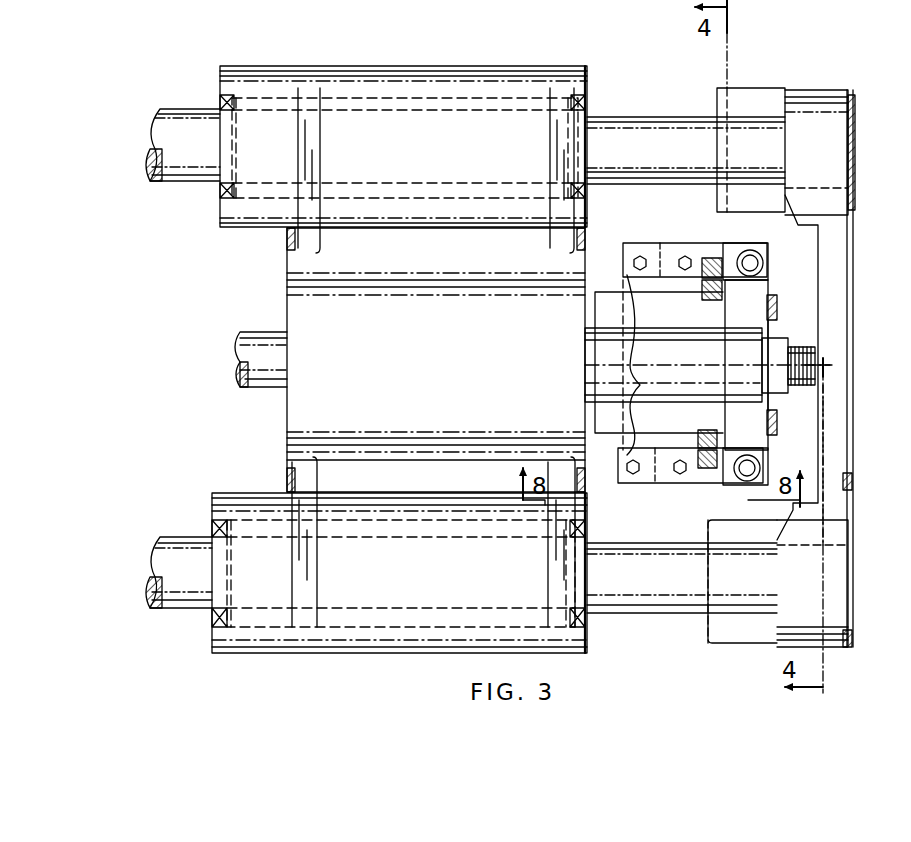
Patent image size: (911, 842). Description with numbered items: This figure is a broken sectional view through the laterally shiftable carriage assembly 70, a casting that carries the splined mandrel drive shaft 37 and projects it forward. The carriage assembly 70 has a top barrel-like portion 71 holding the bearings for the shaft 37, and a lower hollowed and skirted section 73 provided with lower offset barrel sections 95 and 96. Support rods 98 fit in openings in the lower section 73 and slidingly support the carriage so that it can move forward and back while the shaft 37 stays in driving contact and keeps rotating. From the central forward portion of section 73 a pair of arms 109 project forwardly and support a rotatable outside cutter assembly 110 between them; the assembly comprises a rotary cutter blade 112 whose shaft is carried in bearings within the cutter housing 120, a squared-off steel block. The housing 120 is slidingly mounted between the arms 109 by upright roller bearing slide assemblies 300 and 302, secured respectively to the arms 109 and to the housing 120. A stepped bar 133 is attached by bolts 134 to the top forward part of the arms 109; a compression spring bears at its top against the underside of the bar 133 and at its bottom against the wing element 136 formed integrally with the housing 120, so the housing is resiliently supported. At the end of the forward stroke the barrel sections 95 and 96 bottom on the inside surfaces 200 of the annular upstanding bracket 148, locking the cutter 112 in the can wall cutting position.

The shaft 37 is at (676, 367).
The carriage assembly 70 is at (433, 341).
The top barrel-like portion 71 is at (395, 440).
The lower hollowed and skirted section 73 is at (437, 64).
The barrel section 95 is at (576, 78).
The barrel section 96 is at (576, 622).
The support rods 98 is at (204, 151).
The arms 109 is at (660, 365).
The outside cutter assembly 110 is at (792, 318).
The rotary cutter blade 112 is at (776, 322).
The cutter housing 120 is at (783, 283).
The stepped bar 133 is at (703, 241).
The bolts 134 is at (684, 256).
The wing element 136 is at (748, 298).
The annular upstanding bracket 148 is at (823, 436).
The inside surfaces 200 is at (778, 172).
The upright roller bearing slide assembly 300 is at (712, 258).
The upright roller bearing slide assembly 302 is at (710, 295).